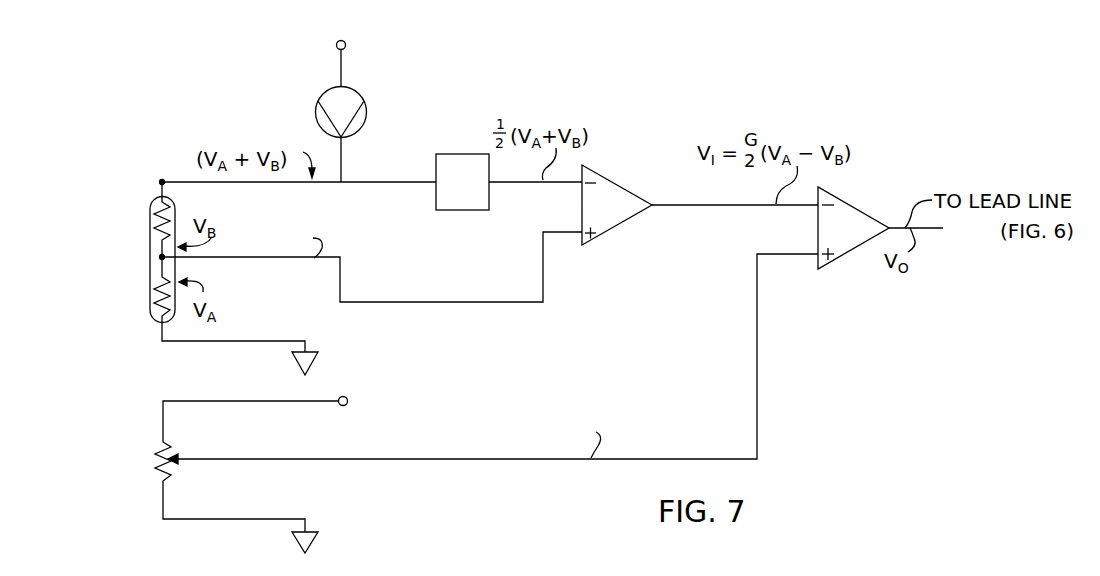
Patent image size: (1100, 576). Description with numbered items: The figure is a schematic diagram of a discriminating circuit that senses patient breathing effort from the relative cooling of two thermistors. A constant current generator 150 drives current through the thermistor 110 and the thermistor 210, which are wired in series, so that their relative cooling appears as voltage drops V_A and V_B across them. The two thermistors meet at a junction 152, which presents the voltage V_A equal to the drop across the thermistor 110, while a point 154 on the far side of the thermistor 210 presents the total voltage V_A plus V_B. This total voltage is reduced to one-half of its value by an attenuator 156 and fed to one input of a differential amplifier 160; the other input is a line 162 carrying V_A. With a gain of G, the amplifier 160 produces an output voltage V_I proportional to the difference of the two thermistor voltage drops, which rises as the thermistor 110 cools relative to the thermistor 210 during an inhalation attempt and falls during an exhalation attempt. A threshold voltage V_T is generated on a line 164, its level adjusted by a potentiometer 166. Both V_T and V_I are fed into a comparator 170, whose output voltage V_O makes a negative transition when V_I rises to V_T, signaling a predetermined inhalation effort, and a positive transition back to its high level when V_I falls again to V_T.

The thermistor 110 is at (158, 304).
The constant current generator 150 is at (320, 110).
The junction 152 is at (160, 257).
The point 154 is at (162, 182).
The attenuator 156 is at (447, 154).
The differential amplifier 160 is at (622, 180).
The line 162 is at (468, 302).
The line 164 is at (530, 460).
The potentiometer 166 is at (157, 462).
The comparator 170 is at (870, 216).
The thermistor 210 is at (154, 210).